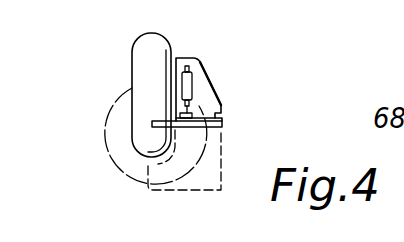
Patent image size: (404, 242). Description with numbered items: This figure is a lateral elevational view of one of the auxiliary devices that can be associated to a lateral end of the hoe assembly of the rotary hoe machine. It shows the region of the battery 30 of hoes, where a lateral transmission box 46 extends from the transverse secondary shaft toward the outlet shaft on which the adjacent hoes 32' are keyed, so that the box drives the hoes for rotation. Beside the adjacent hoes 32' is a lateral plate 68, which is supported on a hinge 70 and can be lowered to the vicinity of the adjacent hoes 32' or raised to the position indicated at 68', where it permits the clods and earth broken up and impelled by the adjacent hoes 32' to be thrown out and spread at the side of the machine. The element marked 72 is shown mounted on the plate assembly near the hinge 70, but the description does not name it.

The battery 30 is at (86, 150).
The adjacent hoes 32' is at (134, 121).
The lateral transmission boxes 46 is at (137, 52).
The lateral plates 68 is at (210, 160).
The raised position of lateral plate 68' is at (233, 89).
The cylinder 72 is at (192, 85).
The hinges 70 is at (390, 83).